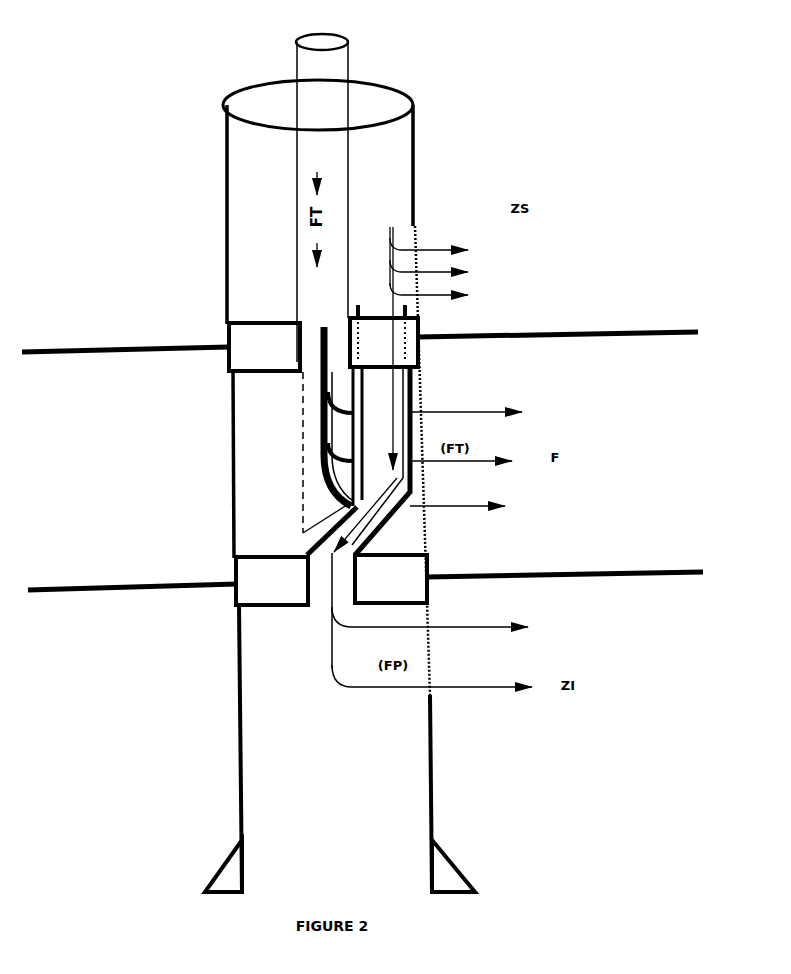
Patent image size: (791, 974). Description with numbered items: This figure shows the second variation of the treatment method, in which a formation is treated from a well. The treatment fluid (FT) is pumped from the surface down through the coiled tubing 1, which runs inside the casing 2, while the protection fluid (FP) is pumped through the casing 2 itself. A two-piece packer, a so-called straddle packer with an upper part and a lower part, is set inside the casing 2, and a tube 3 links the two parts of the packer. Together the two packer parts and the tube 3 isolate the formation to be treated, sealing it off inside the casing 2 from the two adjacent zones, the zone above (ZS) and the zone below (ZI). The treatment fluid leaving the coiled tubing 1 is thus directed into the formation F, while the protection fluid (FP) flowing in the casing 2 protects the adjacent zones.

The coiled tubing 1 is at (346, 56).
The casing 2 is at (228, 262).
The tube 3 is at (410, 389).